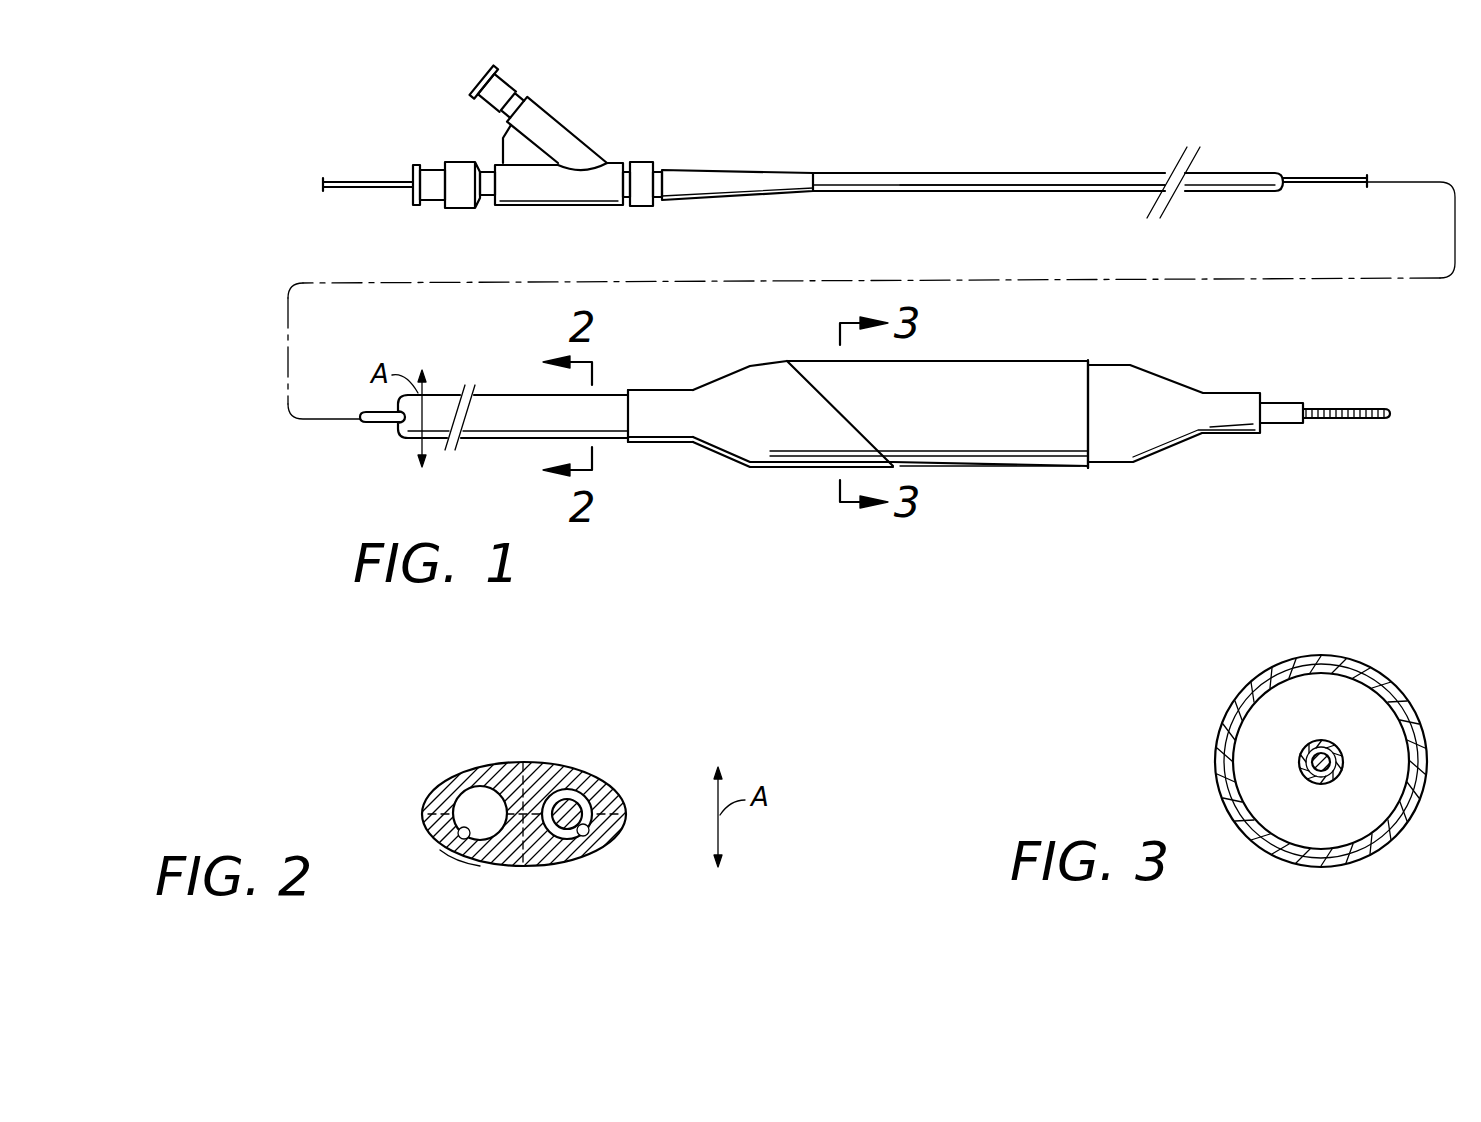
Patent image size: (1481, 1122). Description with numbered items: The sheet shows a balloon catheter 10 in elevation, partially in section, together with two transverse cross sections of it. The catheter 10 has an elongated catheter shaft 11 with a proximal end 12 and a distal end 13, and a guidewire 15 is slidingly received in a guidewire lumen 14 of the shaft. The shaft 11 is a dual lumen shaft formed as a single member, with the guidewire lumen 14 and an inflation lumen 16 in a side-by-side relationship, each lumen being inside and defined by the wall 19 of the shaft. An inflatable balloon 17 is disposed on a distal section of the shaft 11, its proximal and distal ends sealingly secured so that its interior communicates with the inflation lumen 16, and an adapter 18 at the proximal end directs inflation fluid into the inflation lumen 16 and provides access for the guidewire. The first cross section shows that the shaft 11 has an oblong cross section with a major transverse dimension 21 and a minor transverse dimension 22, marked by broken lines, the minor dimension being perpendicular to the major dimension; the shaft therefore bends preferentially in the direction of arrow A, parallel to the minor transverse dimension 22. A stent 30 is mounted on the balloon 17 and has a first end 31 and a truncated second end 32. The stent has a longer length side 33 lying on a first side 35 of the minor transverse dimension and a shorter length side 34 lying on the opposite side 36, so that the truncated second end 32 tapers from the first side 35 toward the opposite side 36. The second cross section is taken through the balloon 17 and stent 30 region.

In FIG. 1, the balloon catheter 10 is at (1022, 140).
In FIG. 1, the catheter shaft 11 is at (1128, 173).
In FIG. 2, the catheter shaft 11 is at (464, 772).
In FIG. 3, the catheter shaft 11 is at (1310, 780).
In FIG. 1, the proximal end 12 is at (850, 173).
In FIG. 1, the distal end 13 is at (620, 390).
In FIG. 2, the guidewire lumen 14 is at (588, 830).
In FIG. 1, the guidewire 15 is at (389, 180).
In FIG. 2, the guidewire 15 is at (580, 806).
In FIG. 3, the guidewire 15 is at (1326, 754).
In FIG. 2, the inflation lumen 16 is at (458, 832).
In FIG. 1, the inflatable balloon 17 is at (1133, 365).
In FIG. 3, the inflatable balloon 17 is at (1393, 826).
In FIG. 1, the adapter 18 is at (614, 160).
In FIG. 2, the wall 19 is at (470, 856).
In FIG. 2, the major transverse dimension 21 is at (430, 810).
In FIG. 2, the minor transverse dimension 22 is at (545, 855).
In FIG. 1, the stent 30 is at (990, 361).
In FIG. 3, the stent 30 is at (1393, 688).
In FIG. 1, the first end 31 is at (1090, 360).
In FIG. 1, the truncated second end 32 is at (787, 361).
In FIG. 1, the longer length side 33 is at (935, 361).
In FIG. 1, the shorter length side 34 is at (990, 466).
In FIG. 1, the first side 35 is at (517, 395).
In FIG. 2, the first side 35 is at (527, 762).
In FIG. 1, the opposite side 36 is at (497, 438).
In FIG. 2, the opposite side 36 is at (520, 867).